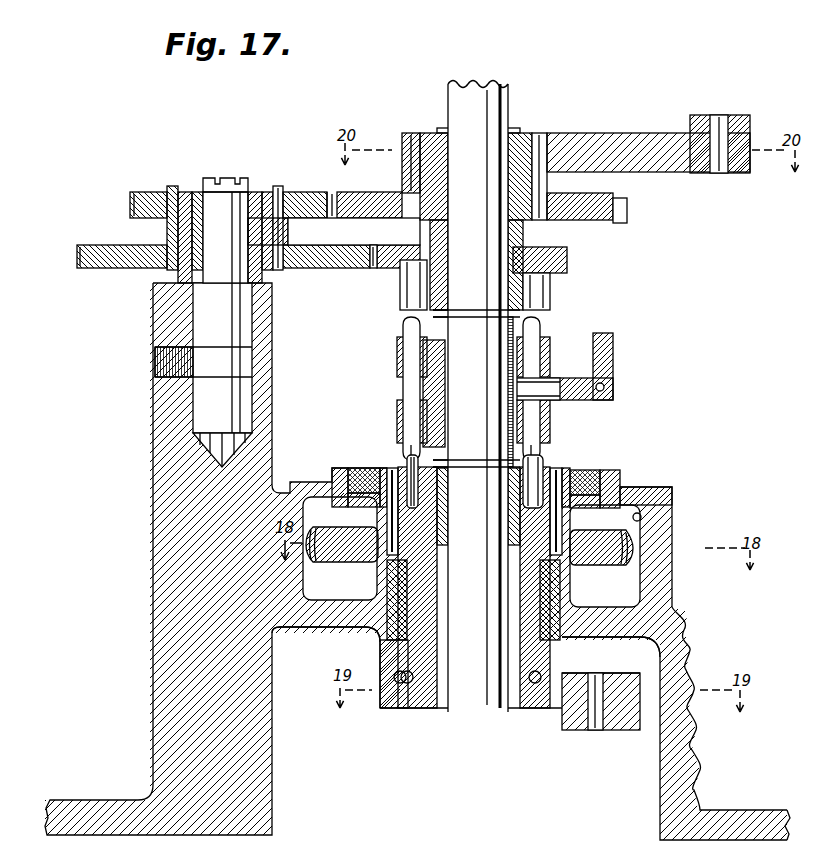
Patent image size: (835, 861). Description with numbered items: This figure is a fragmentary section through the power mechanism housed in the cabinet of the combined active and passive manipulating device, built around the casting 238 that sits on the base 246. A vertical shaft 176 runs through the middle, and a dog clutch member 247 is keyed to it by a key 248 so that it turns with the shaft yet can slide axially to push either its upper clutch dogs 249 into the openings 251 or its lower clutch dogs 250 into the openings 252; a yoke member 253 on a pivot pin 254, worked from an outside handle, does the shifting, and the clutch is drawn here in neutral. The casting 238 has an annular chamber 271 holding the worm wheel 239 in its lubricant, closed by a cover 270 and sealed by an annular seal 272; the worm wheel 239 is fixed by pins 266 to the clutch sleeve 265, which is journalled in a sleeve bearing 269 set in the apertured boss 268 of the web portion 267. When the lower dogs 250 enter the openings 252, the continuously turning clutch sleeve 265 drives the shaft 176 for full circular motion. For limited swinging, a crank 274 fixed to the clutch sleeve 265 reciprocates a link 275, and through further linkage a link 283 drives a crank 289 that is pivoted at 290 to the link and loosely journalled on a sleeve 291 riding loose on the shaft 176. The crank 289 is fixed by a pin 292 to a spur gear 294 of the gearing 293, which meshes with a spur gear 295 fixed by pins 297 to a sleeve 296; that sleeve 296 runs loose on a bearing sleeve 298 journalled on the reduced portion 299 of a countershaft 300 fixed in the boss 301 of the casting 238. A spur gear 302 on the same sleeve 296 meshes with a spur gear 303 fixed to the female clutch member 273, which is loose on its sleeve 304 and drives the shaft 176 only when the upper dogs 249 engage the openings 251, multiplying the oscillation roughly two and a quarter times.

The shaft 176 is at (448, 95).
The casting 238 is at (686, 598).
The worm wheel 239 is at (345, 562).
The base 246 is at (107, 800).
The dog clutch member 247 is at (391, 362).
The key 248 is at (513, 335).
The clutch dogs 249 is at (406, 328).
The clutch dogs 250 is at (408, 448).
The openings 251 is at (414, 301).
The openings 252 is at (580, 470).
The yoke member 253 is at (575, 396).
The pivot pin 254 is at (612, 384).
The clutch sleeve 265 is at (428, 710).
The pins 266 is at (636, 460).
The web portion 267 is at (355, 628).
The apertured boss 268 is at (578, 566).
The sleeve bearing 269 is at (575, 635).
The cover 270 is at (660, 487).
The annular chamber 271 is at (642, 516).
The annular seal 272 is at (386, 450).
The female clutch member 273 is at (548, 287).
The crank 274 is at (390, 708).
The link 275 is at (622, 731).
The link 283 is at (700, 124).
The crank 289 is at (592, 133).
The pivotal connection 290 is at (718, 173).
The sleeve 291 is at (520, 140).
The pin 292 is at (430, 133).
The gearing 293 is at (283, 182).
The spur gear 294 is at (350, 221).
The spur gear 295 is at (147, 192).
The sleeve 296 is at (165, 228).
The pins 297 is at (178, 192).
The bearing sleeve 298 is at (156, 284).
The reduced portion 299 is at (226, 205).
The countershaft 300 is at (213, 321).
The boss 301 is at (158, 345).
The spur gear 302 is at (112, 270).
The spur gear 303 is at (390, 268).
The sleeve 304 is at (523, 237).